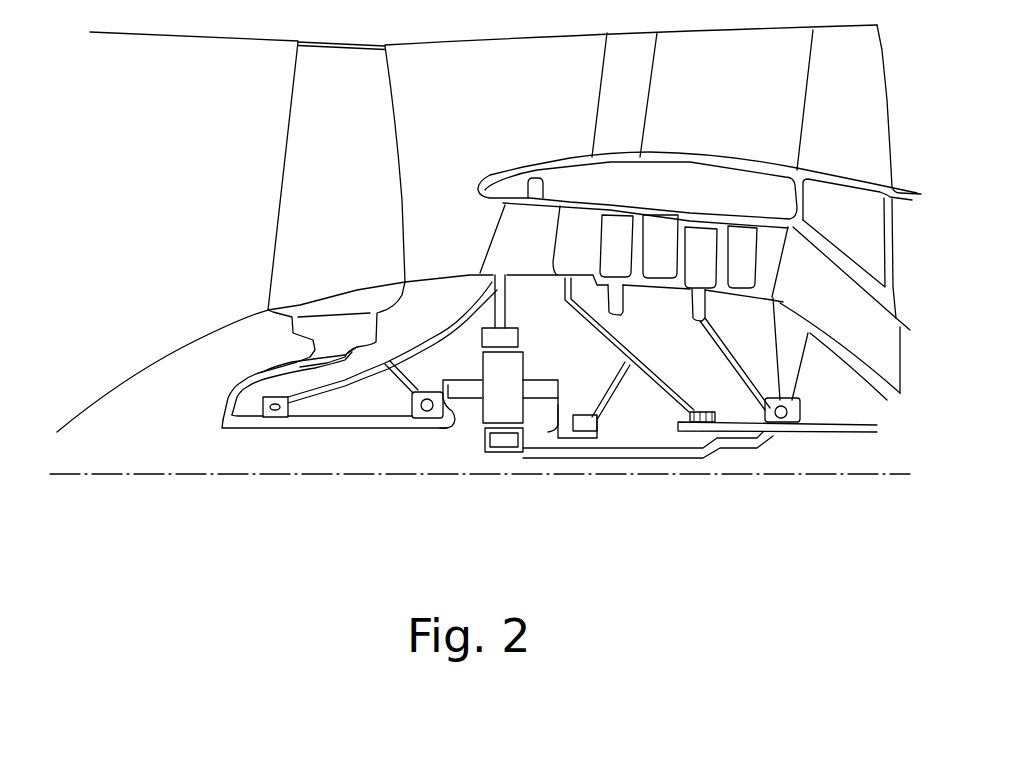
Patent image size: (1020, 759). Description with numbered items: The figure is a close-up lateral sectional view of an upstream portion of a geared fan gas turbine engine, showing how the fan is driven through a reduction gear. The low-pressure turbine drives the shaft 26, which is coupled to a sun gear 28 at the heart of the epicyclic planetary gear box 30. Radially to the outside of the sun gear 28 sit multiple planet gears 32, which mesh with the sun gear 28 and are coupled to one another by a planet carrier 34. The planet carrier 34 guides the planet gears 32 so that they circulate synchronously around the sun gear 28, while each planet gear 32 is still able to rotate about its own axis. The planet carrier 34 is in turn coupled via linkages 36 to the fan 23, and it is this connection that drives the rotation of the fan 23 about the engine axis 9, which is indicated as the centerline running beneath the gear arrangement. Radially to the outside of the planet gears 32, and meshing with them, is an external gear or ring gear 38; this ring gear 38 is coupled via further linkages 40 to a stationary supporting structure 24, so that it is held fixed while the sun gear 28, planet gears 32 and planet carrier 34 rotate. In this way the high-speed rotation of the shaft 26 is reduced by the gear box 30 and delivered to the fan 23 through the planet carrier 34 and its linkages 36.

The engine axis 9 is at (258, 475).
The fan 23 is at (298, 180).
The stationary supporting structure 24 is at (510, 233).
The shaft 26 is at (663, 458).
The sun gear 28 is at (503, 438).
The epicyclic planetary gear box 30 is at (452, 434).
The planet gears 32 is at (485, 410).
The planet carrier 34 is at (548, 428).
The linkages 36 is at (446, 415).
The ring gear 38 is at (482, 340).
The linkages 40 is at (507, 315).